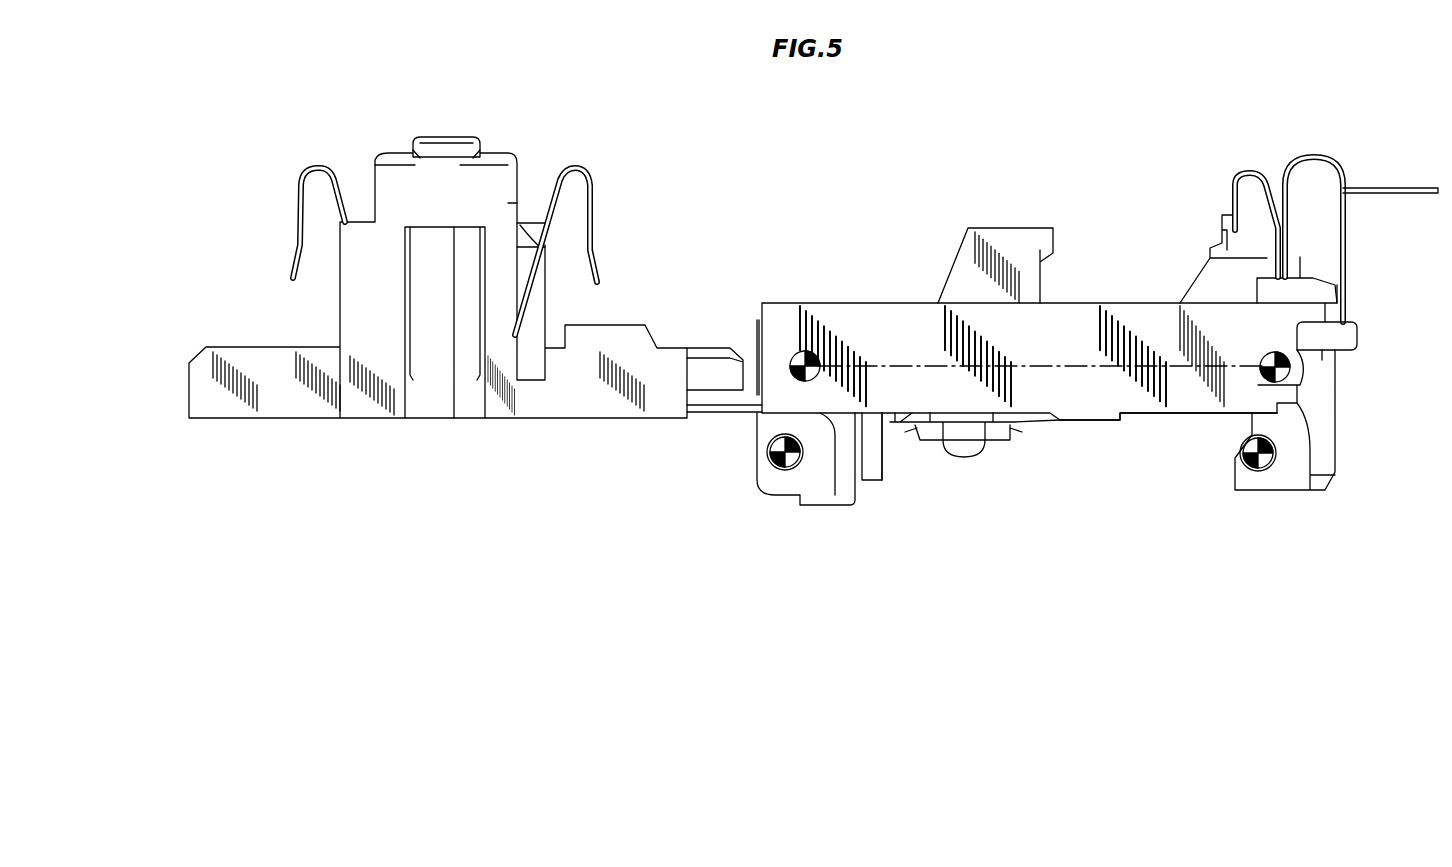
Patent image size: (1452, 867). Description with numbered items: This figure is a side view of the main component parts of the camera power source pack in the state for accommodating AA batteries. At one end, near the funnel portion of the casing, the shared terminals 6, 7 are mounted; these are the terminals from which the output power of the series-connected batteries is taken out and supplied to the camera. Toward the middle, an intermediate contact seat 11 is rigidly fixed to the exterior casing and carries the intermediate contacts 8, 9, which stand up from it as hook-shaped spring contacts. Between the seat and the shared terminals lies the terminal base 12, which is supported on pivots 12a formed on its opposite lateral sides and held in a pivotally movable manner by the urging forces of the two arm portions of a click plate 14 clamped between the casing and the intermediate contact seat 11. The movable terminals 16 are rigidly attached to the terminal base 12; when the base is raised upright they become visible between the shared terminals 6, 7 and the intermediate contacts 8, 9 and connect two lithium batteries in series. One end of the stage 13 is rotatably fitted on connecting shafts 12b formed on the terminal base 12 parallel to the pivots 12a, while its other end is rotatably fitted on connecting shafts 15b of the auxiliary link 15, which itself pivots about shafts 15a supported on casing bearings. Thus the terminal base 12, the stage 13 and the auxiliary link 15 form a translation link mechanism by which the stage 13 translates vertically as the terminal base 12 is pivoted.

The shared terminal 6 is at (1250, 175).
The shared terminal 7 is at (1316, 158).
The intermediate contact 8 is at (562, 168).
The intermediate contact 9 is at (302, 170).
The intermediate contact seat 11 is at (428, 150).
The terminal base 12 is at (1013, 232).
The pivot 12a is at (790, 468).
The connecting shaft 12b is at (800, 355).
The stage 13 is at (1125, 400).
The click plate 14 is at (705, 418).
The auxiliary link 15 is at (1337, 472).
The shaft 15a is at (1265, 470).
The connecting shaft 15b is at (1295, 388).
The movable terminal 16 is at (957, 437).